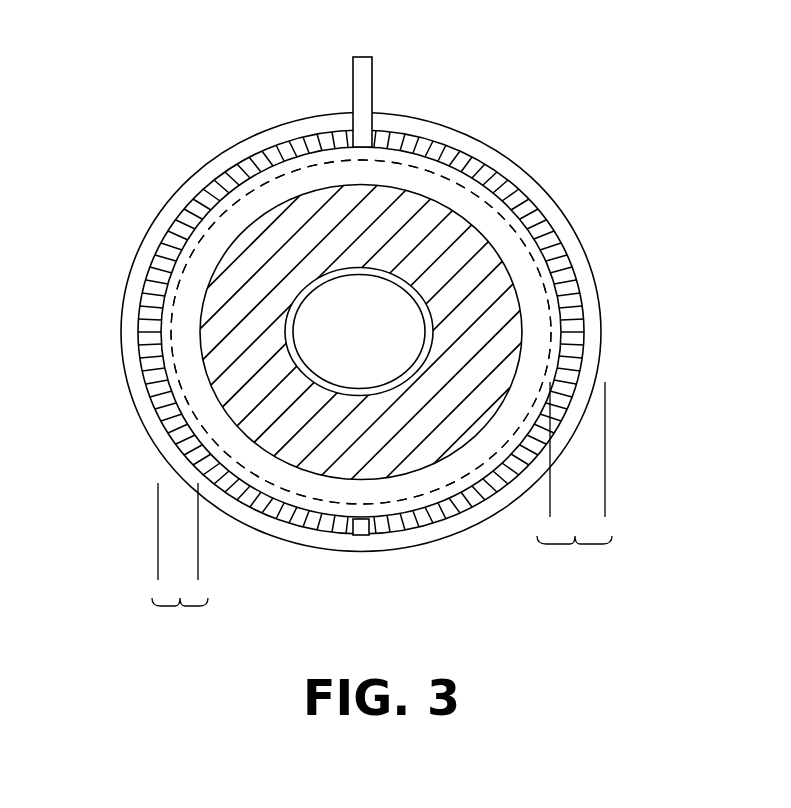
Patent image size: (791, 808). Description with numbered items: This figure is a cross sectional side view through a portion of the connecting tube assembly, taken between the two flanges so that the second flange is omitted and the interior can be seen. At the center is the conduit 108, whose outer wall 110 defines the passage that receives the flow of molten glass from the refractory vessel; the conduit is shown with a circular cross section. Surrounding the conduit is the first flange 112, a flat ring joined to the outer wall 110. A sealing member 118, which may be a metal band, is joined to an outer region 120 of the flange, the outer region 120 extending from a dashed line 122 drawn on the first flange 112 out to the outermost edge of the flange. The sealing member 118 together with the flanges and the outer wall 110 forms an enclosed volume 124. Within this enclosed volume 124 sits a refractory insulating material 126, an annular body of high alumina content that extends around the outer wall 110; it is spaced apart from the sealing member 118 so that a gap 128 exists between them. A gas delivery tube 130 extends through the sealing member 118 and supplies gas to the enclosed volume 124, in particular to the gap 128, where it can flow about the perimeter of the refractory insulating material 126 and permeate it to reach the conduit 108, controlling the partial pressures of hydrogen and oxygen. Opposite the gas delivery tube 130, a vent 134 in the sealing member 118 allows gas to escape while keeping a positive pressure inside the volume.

The conduit 108 is at (270, 303).
The outer wall 110 is at (230, 402).
The first flange 112 is at (257, 137).
The sealing member 118 is at (525, 195).
The outer region 120 is at (574, 481).
The dashed line 122 is at (445, 177).
The enclosed volume 124 is at (218, 220).
The refractory insulating material 126 is at (523, 338).
The gap 128 is at (180, 562).
The gas delivery tube 130 is at (373, 78).
The vent 134 is at (370, 527).